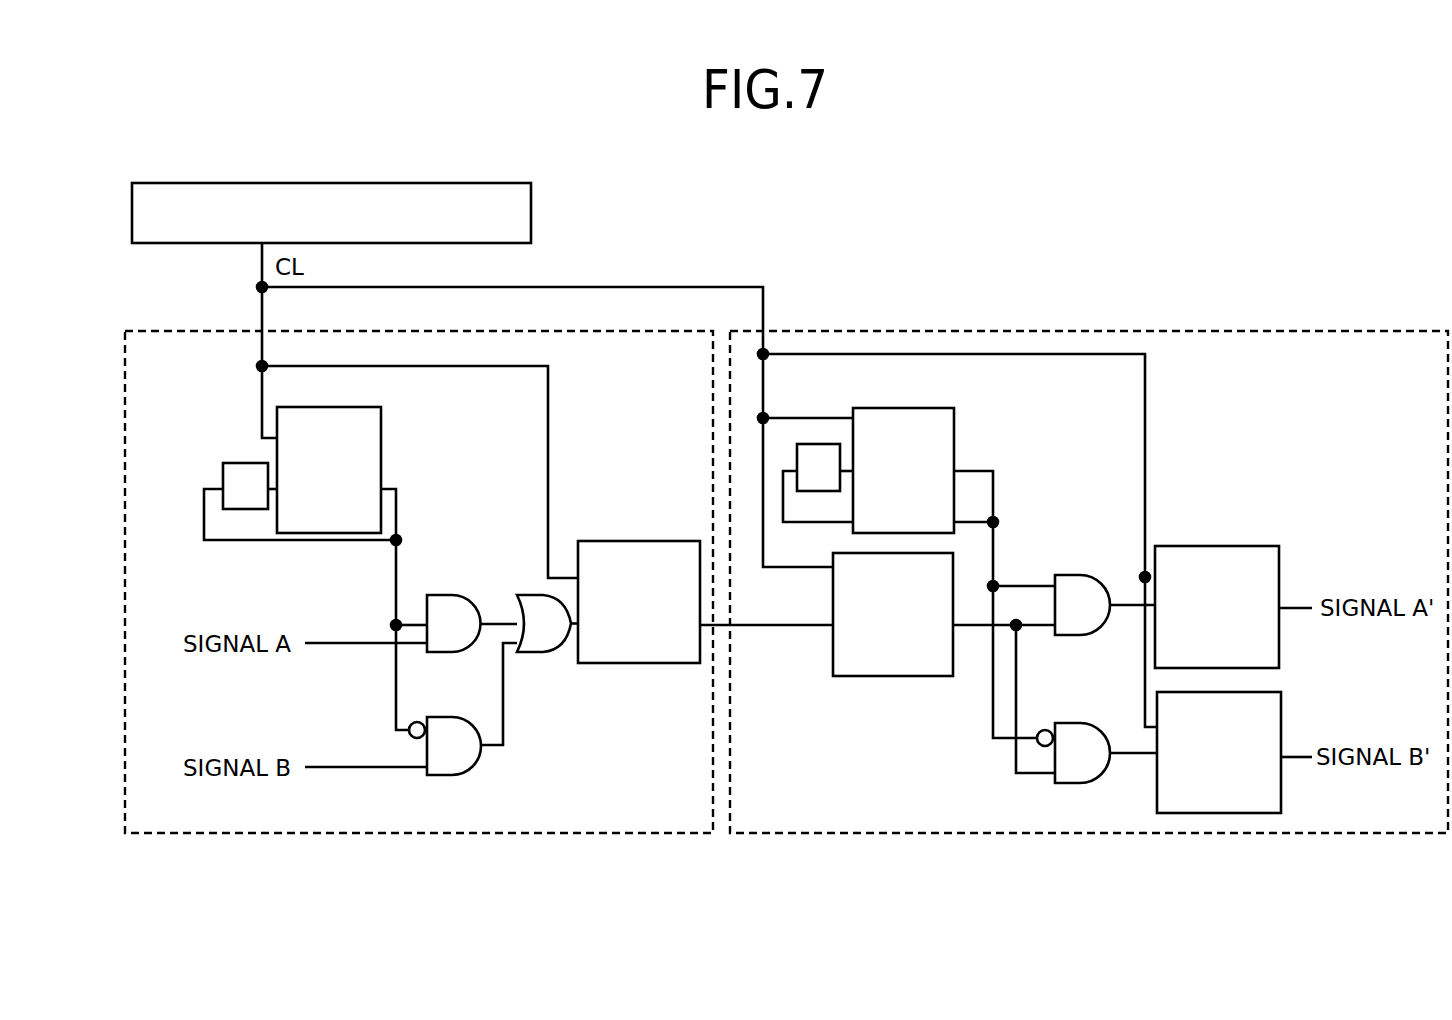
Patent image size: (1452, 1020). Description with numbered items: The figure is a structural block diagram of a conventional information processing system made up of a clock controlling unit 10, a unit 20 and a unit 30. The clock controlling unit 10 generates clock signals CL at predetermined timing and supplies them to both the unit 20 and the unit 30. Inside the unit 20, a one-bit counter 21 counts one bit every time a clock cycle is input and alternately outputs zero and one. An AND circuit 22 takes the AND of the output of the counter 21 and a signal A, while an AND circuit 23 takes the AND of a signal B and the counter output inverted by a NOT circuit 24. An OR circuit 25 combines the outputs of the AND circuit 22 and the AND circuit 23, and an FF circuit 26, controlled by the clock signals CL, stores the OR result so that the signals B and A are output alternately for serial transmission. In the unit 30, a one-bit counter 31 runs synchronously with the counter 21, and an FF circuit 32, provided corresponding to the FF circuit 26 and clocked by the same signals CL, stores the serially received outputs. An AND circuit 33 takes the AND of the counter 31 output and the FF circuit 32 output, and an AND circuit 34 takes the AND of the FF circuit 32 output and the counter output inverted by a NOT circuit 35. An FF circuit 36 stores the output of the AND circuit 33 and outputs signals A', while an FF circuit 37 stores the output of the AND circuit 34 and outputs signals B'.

The clock controlling unit 10 is at (480, 183).
The unit 20 is at (155, 331).
The counter 21 is at (378, 437).
The AND circuit 22 is at (450, 597).
The AND circuit 23 is at (450, 720).
The NOT circuit 24 is at (420, 721).
The OR circuit 25 is at (535, 656).
The FF circuit 26 is at (637, 541).
The unit 30 is at (1405, 331).
The counter 31 is at (933, 414).
The FF circuit 32 is at (935, 553).
The AND circuit 33 is at (1078, 577).
The AND circuit 34 is at (1078, 725).
The NOT circuit 35 is at (1047, 729).
The FF circuit 36 is at (1262, 553).
The FF circuit 37 is at (1262, 697).